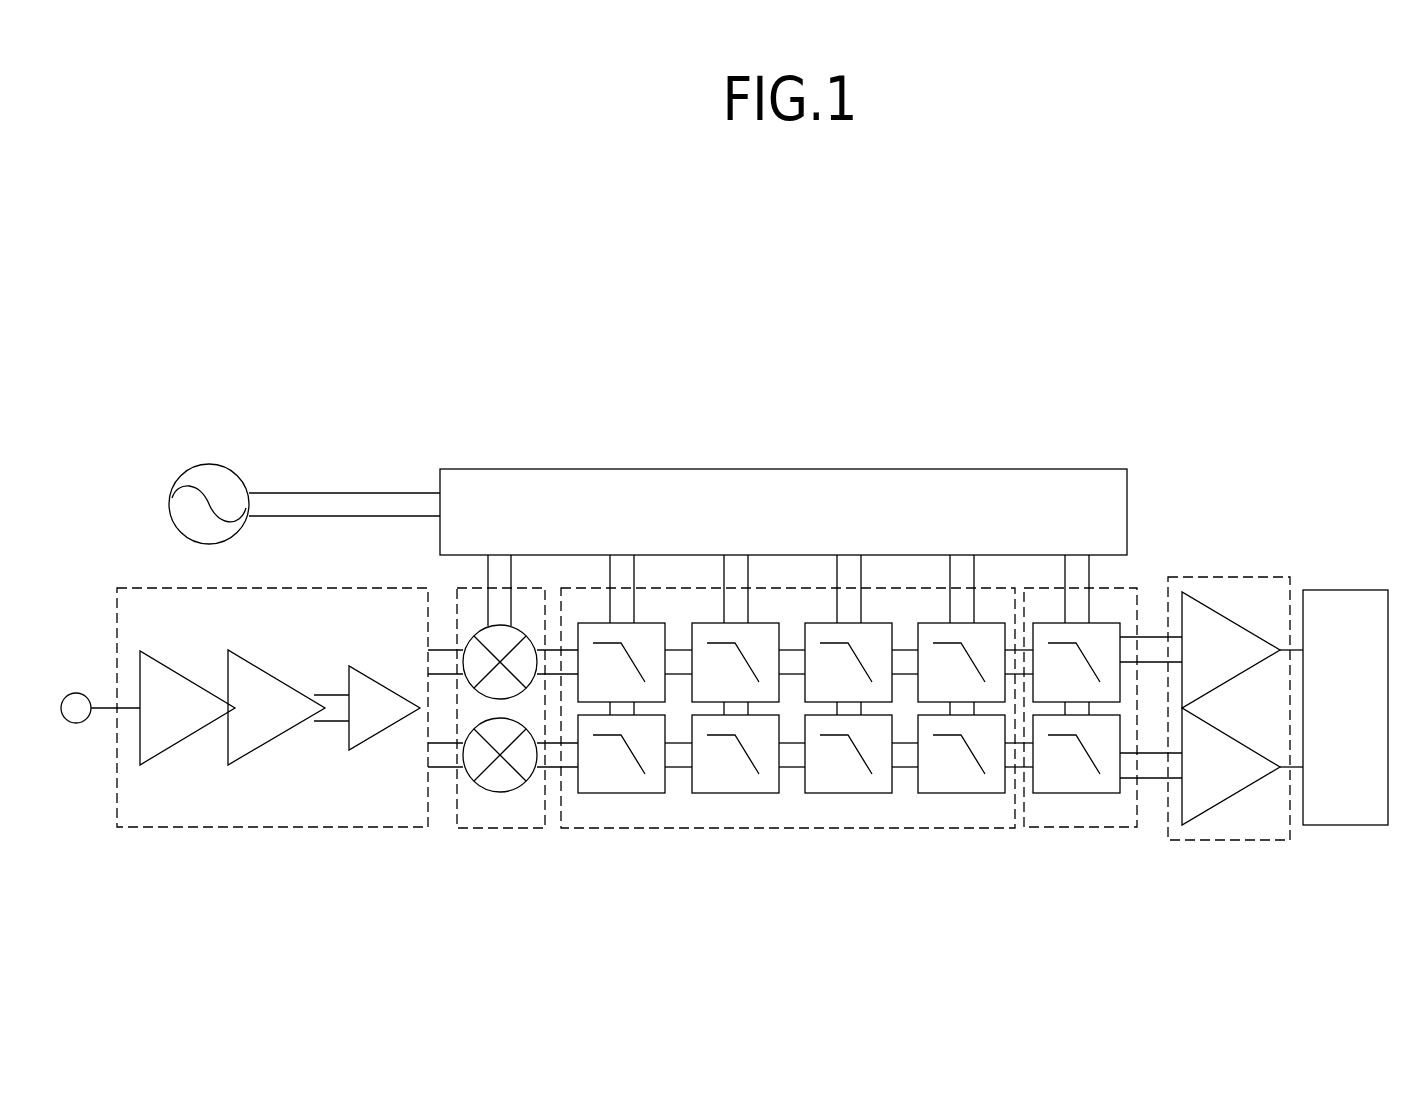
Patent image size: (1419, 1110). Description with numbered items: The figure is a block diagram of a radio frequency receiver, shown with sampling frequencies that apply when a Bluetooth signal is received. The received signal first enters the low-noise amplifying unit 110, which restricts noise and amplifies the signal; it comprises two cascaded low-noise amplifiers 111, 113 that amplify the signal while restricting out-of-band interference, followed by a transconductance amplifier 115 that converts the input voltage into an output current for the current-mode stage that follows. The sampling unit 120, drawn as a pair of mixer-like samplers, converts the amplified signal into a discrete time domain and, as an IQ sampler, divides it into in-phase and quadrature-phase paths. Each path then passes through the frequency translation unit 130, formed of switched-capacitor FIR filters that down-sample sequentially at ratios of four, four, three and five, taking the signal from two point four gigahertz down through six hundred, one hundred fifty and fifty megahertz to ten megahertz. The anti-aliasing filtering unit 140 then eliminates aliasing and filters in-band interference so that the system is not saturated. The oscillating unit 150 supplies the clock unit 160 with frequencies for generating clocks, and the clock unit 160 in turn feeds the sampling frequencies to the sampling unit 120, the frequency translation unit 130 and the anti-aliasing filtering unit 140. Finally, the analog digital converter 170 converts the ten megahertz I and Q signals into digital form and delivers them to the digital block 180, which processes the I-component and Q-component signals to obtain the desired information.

The low-noise amplifying unit 110 is at (192, 828).
The low-noise amplifier 111 is at (193, 677).
The low-noise amplifier 113 is at (277, 737).
The transconductance amplifier 115 is at (387, 730).
The sampling unit 120 is at (503, 828).
The frequency translation unit 130 is at (842, 828).
The anti-aliasing filtering unit 140 is at (1092, 828).
The oscillating unit 150 is at (200, 463).
The clock unit 160 is at (785, 469).
The analog digital converter 170 is at (1242, 840).
The digital block 180 is at (1347, 827).